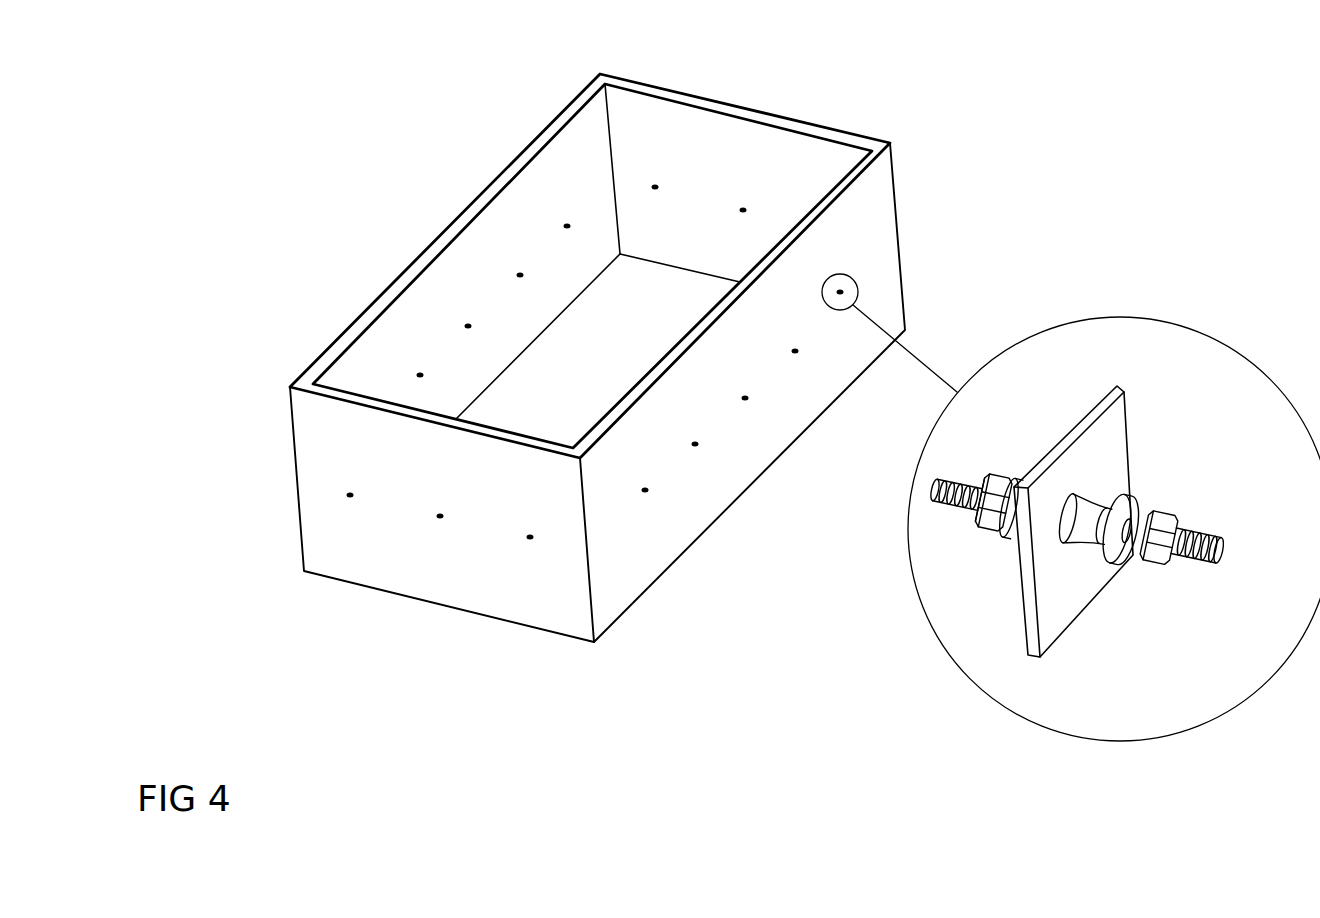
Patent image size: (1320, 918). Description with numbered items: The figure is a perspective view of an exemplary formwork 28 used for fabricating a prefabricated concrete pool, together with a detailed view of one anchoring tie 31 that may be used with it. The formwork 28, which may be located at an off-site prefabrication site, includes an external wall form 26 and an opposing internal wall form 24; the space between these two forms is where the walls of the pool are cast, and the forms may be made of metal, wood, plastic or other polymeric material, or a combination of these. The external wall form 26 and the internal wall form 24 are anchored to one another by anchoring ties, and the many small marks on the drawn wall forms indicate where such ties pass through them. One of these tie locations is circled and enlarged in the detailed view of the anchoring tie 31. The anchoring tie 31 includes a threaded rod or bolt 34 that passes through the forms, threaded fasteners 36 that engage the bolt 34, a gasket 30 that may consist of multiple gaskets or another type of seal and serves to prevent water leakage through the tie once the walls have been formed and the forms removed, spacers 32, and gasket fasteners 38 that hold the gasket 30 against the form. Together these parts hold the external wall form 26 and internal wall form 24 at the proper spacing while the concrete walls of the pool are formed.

The internal wall form 24 is at (458, 292).
The external wall form 26 is at (313, 362).
The formwork 28 is at (1012, 168).
The gasket 30 is at (1117, 438).
The anchoring tie 31 is at (1143, 345).
The spacers 32 is at (1138, 500).
The bolt 34 is at (1193, 533).
The threaded fasteners 36 is at (1142, 572).
The gasket fasteners 38 is at (1078, 535).